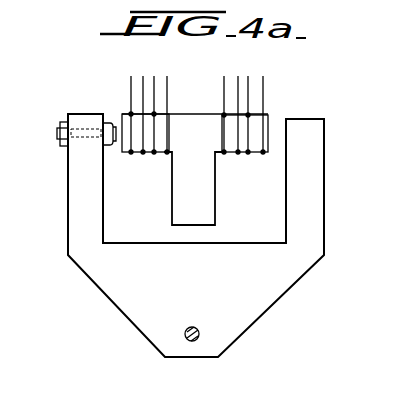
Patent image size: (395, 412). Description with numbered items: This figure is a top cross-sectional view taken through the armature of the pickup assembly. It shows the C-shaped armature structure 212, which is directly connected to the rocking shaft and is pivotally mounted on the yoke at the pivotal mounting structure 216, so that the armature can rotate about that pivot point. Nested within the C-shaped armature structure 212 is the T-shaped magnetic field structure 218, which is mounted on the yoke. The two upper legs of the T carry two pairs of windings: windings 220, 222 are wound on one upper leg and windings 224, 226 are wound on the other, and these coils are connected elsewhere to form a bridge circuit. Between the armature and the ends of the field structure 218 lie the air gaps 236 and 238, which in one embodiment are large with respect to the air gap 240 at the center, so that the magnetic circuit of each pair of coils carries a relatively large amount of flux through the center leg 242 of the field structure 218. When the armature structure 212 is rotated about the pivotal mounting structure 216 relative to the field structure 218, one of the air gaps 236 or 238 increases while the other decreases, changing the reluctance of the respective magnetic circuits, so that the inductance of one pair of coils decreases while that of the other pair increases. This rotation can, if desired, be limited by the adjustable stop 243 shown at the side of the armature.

The armature structure 212 is at (255, 303).
The pivotal mounting structure 216 is at (194, 326).
The field structure 218 is at (184, 108).
The winding 220 is at (147, 154).
The winding 222 is at (163, 156).
The winding 224 is at (237, 155).
The winding 226 is at (262, 156).
The air gap 236 is at (120, 120).
The air gap 238 is at (273, 122).
The air gap 240 is at (203, 238).
The center leg 242 is at (176, 212).
The adjustable stop 243 is at (85, 135).